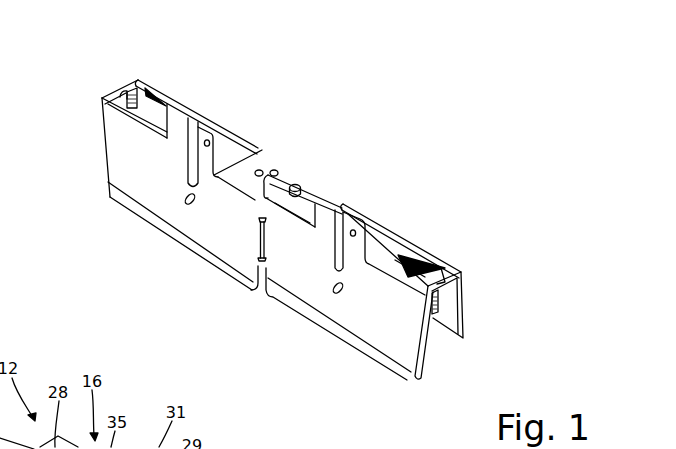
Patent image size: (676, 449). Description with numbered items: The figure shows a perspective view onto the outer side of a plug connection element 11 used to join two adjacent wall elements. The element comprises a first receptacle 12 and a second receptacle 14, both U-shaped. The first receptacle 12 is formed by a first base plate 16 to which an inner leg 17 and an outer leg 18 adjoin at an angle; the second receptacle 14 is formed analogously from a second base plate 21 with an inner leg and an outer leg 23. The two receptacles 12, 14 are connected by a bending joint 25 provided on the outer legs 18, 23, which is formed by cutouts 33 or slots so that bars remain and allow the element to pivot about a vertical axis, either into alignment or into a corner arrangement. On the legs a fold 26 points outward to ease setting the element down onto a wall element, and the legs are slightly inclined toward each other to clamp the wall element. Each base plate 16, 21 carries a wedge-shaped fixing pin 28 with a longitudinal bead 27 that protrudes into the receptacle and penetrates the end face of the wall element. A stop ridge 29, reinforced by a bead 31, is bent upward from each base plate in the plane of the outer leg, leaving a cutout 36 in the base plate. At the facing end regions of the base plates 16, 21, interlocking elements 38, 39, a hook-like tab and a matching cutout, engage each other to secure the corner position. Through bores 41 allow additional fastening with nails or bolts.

The plug connection element 11 is at (400, 154).
The first receptacle 12 is at (447, 232).
The second receptacle 14 is at (193, 64).
The first base plate 16 is at (333, 180).
The inner leg 17 is at (467, 313).
The outer leg 18 is at (410, 333).
The second base plate 21 is at (250, 162).
The outer leg 23 is at (117, 135).
The bending joint 25 is at (255, 291).
The fold 26 is at (465, 342).
The longitudinal bead 27 is at (113, 94).
The fixing pin 28 is at (130, 90).
The stop ridge 29 is at (177, 110).
The bead 31 is at (192, 116).
The cutout 33 is at (265, 246).
The cutout 36 is at (226, 150).
The interlocking element 38 is at (297, 184).
The interlocking element 39 is at (270, 172).
The through bores 41 is at (188, 204).